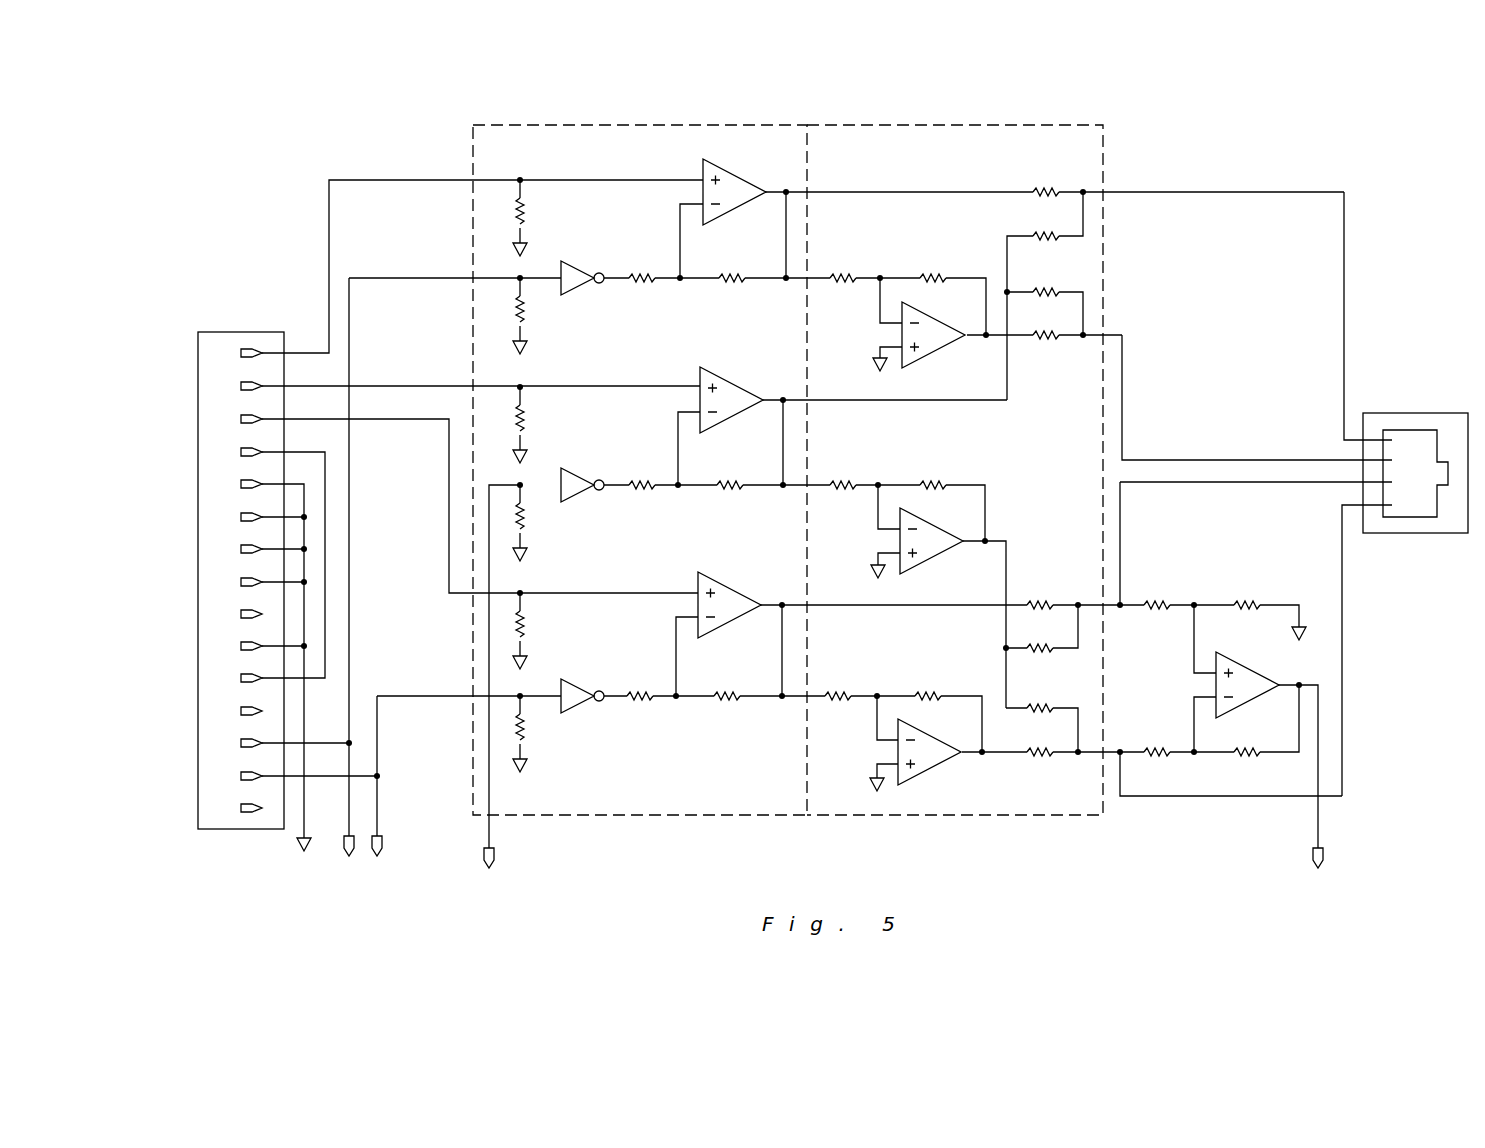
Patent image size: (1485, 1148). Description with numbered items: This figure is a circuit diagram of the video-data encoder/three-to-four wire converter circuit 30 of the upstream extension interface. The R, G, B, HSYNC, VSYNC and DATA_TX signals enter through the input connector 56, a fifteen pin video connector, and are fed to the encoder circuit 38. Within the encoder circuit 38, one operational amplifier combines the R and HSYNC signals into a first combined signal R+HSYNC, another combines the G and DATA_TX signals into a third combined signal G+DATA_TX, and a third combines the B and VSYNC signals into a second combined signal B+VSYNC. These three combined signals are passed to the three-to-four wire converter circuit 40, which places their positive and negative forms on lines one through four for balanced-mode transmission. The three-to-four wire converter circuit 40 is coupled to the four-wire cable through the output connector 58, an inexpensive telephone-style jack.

The video-data encoder/3-to-4 wire converter circuit 30 is at (262, 176).
The input connector 56 is at (243, 330).
The encoder circuit 38 is at (662, 765).
The 3-to-4 wire converter circuit 40 is at (1103, 165).
The output connector 58 is at (1416, 412).